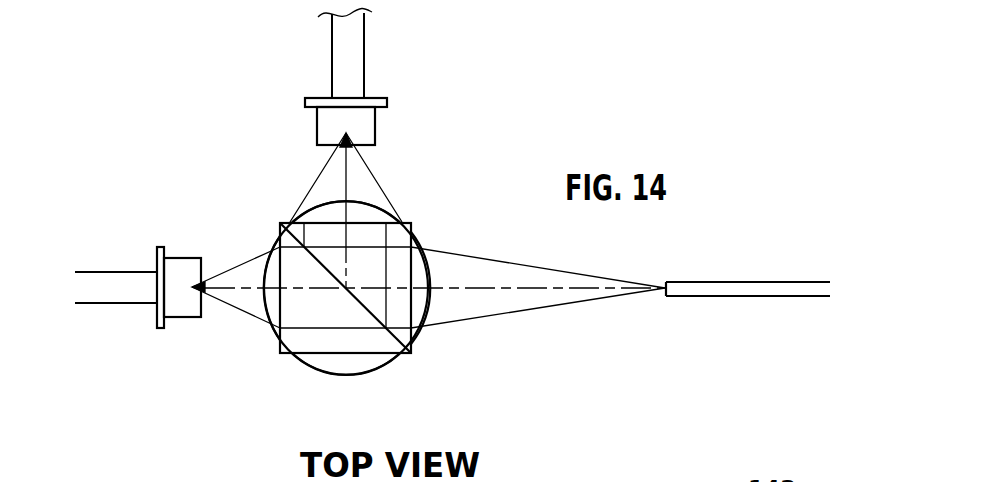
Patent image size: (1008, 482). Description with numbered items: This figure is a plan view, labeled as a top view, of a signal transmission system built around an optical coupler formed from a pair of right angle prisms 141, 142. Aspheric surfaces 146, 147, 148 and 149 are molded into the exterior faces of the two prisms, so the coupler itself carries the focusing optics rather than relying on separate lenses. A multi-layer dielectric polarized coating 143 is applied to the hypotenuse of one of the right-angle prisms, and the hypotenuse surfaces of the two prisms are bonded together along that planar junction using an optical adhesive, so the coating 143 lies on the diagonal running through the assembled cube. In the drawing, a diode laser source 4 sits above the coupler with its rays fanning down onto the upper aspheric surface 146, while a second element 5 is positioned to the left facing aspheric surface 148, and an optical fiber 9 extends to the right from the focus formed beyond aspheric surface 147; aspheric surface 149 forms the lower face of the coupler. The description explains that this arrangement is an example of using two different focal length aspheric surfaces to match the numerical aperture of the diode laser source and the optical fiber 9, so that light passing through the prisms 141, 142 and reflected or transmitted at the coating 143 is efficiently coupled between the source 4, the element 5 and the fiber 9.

The light emitting element 4 is at (376, 123).
The light receiving element 5 is at (190, 258).
The optical fiber 9 is at (693, 297).
The right angle prism 141 is at (405, 222).
The right angle prism 142 is at (290, 353).
The multi-layer dielectric polarized coating 143 is at (361, 308).
The aspheric surface 146 is at (327, 203).
The aspheric surface 147 is at (425, 295).
The aspheric surface 148 is at (258, 293).
The aspheric surface 149 is at (328, 374).